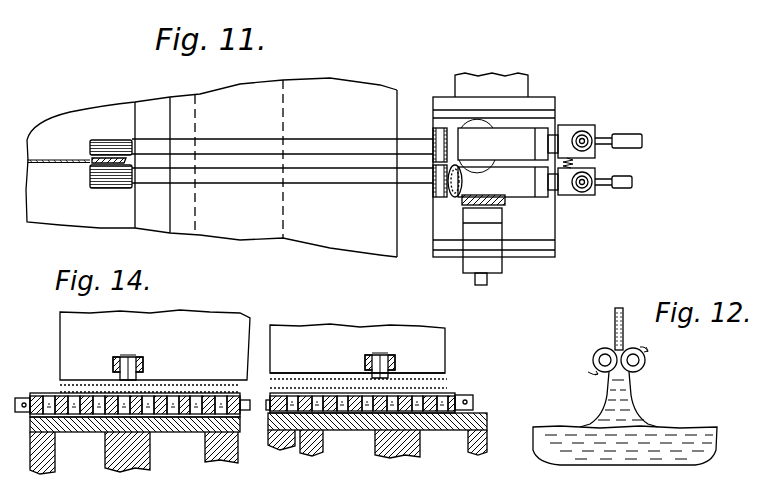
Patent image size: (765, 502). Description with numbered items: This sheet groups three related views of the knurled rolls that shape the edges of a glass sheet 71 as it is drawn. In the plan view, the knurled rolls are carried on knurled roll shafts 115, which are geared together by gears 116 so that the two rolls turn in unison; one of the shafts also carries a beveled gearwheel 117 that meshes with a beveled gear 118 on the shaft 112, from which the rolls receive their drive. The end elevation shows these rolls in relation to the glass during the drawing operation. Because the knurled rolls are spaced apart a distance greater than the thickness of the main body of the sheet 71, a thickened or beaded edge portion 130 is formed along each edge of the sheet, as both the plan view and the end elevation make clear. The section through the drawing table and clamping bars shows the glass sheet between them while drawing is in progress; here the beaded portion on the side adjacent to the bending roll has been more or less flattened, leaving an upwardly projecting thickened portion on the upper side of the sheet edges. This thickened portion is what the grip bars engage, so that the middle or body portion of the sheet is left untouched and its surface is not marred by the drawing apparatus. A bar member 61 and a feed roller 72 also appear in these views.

In FIG. 14, the bar member 61 is at (430, 380).
In FIG. 11, the sheet 71 is at (60, 164).
In FIG. 14, the sheet 71 is at (340, 430).
In FIG. 11, the feed roller 72 is at (106, 140).
In FIG. 12, the feed roller 72 is at (646, 366).
In FIG. 11, the shaft 112 is at (488, 283).
In FIG. 11, the knurled roll shafts 115 is at (326, 178).
In FIG. 11, the gears 116 is at (433, 168).
In FIG. 11, the beveled gearwheel 117 is at (455, 198).
In FIG. 11, the beveled gear 118 is at (505, 207).
In FIG. 11, the thickened or beaded edge portion 130 is at (108, 182).
In FIG. 14, the thickened or beaded edge portion 130 is at (448, 389).